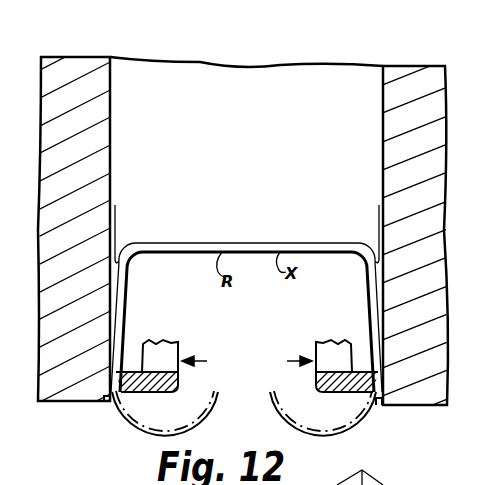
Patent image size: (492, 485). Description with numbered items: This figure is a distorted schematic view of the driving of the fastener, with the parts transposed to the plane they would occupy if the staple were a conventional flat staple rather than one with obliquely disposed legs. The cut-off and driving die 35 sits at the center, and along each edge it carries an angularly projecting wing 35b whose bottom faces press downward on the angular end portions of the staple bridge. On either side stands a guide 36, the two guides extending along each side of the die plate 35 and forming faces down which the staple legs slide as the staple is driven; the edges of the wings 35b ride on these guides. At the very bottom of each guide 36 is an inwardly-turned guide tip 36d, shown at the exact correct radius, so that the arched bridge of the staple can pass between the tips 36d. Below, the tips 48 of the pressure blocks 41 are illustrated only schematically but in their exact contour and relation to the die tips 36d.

The cut-off and driving die 35 is at (262, 173).
The wing 35b is at (124, 252).
The guide 36 is at (440, 162).
The guide tip 36d is at (96, 404).
The pressure block 41 is at (170, 347).
The tip of pressure block 48 is at (135, 379).